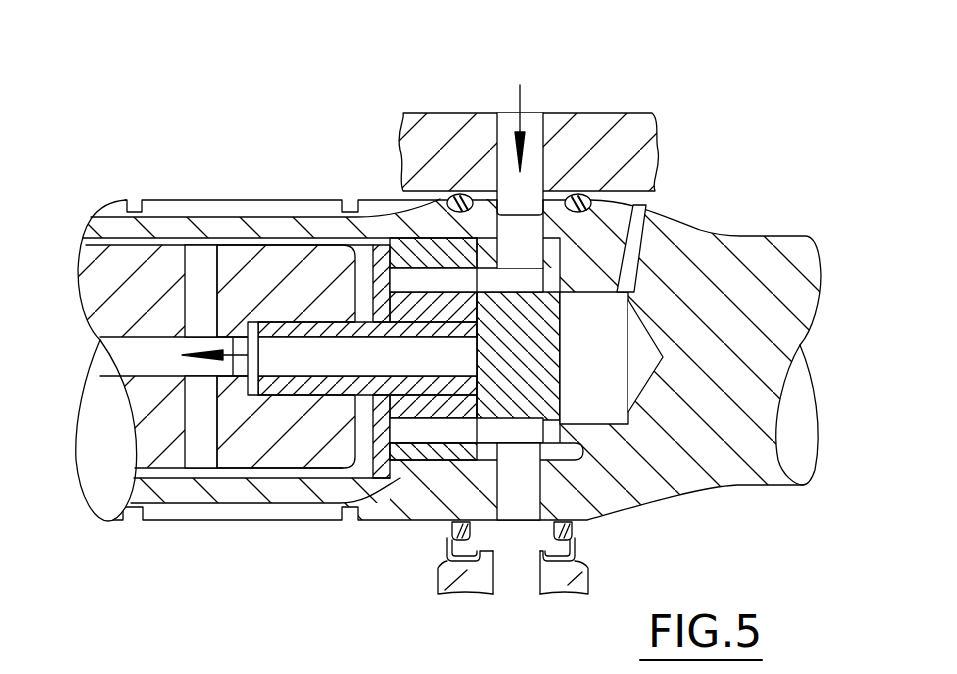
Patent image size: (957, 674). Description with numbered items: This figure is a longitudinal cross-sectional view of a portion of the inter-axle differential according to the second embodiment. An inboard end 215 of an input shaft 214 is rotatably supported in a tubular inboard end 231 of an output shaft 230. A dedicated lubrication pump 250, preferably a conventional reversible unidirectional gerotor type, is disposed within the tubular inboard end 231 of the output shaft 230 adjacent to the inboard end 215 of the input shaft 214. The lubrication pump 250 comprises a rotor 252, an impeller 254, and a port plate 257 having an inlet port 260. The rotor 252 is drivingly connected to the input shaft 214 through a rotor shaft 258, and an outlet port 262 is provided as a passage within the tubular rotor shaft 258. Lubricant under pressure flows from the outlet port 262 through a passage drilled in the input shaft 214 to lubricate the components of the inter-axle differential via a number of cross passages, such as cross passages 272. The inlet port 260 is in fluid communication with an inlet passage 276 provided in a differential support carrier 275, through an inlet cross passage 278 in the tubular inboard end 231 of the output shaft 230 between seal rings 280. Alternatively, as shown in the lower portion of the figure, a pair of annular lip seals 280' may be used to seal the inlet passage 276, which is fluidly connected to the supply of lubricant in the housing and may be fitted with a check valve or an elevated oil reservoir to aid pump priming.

The input shaft 214 is at (95, 282).
The inboard end of the input shaft 215 is at (287, 255).
The output shaft 230 is at (777, 250).
The tubular inboard end of the output shaft 231 is at (173, 495).
The lubrication pump 250 is at (427, 457).
The rotor 252 is at (480, 356).
The impeller 254 is at (428, 248).
The port plate 257 is at (553, 342).
The rotor shaft 258 is at (327, 387).
The inlet port 260 is at (552, 275).
The outlet port 262 is at (371, 369).
The cross passages 272 is at (195, 258).
The differential support carrier 275 is at (610, 128).
The inlet passage 276 is at (548, 120).
The inlet cross passage 278 is at (515, 250).
The seal rings 280 is at (532, 142).
The annular lip seals 280' is at (558, 558).